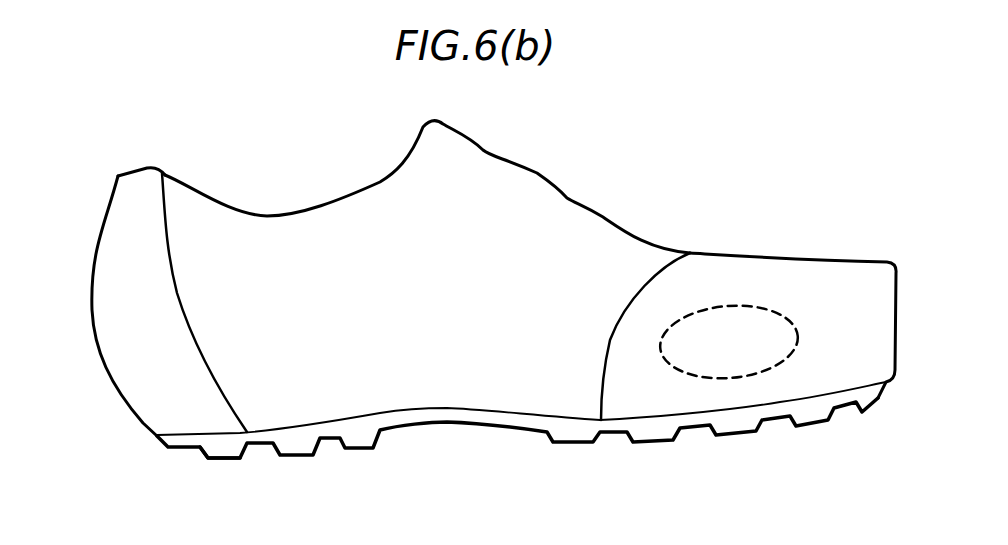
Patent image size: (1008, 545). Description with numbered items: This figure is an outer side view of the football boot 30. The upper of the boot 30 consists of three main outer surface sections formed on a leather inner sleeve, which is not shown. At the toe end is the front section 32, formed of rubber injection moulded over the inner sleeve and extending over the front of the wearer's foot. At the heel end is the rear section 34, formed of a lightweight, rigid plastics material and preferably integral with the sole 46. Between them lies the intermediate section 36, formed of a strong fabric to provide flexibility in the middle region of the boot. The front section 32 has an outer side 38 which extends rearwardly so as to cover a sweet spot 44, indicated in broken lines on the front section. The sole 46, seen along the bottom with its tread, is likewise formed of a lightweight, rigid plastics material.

The boot 30 is at (475, 133).
The front section 32 is at (812, 362).
The rear section 34 is at (108, 295).
The intermediate section 36 is at (517, 403).
The outer side 38 is at (826, 329).
The sweet spot 44 is at (747, 313).
The sole 46 is at (217, 442).